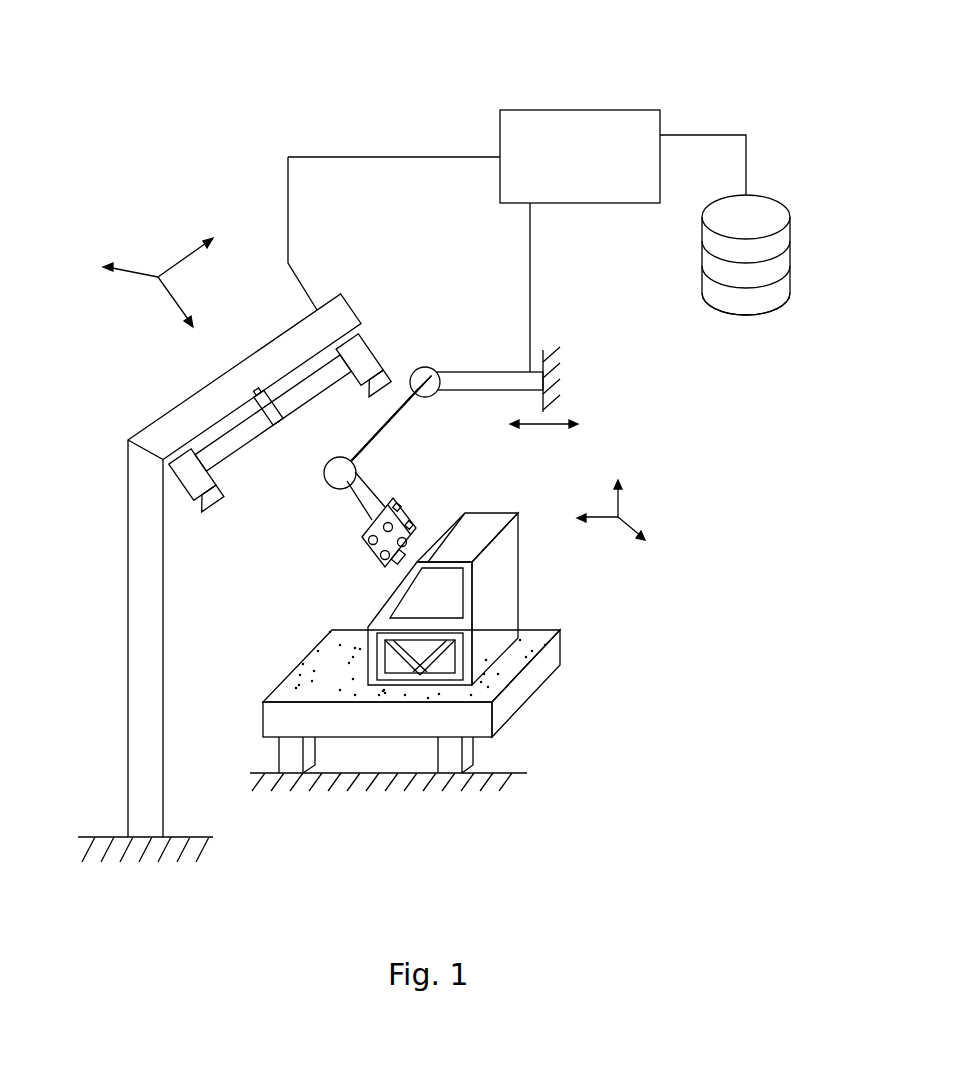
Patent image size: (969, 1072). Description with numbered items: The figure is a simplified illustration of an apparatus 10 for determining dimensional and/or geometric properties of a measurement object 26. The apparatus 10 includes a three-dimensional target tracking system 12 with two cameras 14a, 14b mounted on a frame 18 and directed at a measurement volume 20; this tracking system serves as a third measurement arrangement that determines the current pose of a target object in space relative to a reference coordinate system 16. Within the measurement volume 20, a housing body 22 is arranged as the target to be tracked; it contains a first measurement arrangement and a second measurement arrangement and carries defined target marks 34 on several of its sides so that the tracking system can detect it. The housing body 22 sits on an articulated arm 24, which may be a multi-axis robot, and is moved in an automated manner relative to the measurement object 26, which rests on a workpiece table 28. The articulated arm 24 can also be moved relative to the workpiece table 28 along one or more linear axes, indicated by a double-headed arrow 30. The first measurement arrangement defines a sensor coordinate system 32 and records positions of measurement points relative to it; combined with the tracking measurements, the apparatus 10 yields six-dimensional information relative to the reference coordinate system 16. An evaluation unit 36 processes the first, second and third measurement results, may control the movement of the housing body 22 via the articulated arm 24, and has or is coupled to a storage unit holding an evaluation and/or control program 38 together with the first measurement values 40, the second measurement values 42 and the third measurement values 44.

The apparatus 10 is at (132, 108).
The 3D target tracking system 12 is at (219, 438).
The camera 14a is at (375, 350).
The camera 14b is at (190, 503).
The reference coordinate system 16 is at (173, 262).
The frame 18 is at (127, 598).
The measurement volume 20 is at (284, 565).
The housing body 22 is at (406, 484).
The articulated arm 24 is at (474, 371).
The measurement object 26 is at (510, 594).
The workpiece table 28 is at (299, 660).
The double-headed arrow 30 is at (533, 428).
The sensor coordinate system 32 is at (625, 520).
The target marks 34 is at (366, 540).
The evaluation unit 36 is at (576, 110).
The evaluation and/or control program 38 is at (792, 230).
The first measurement values 40 is at (792, 258).
The second measurement values 42 is at (792, 283).
The third measurement values 44 is at (792, 308).